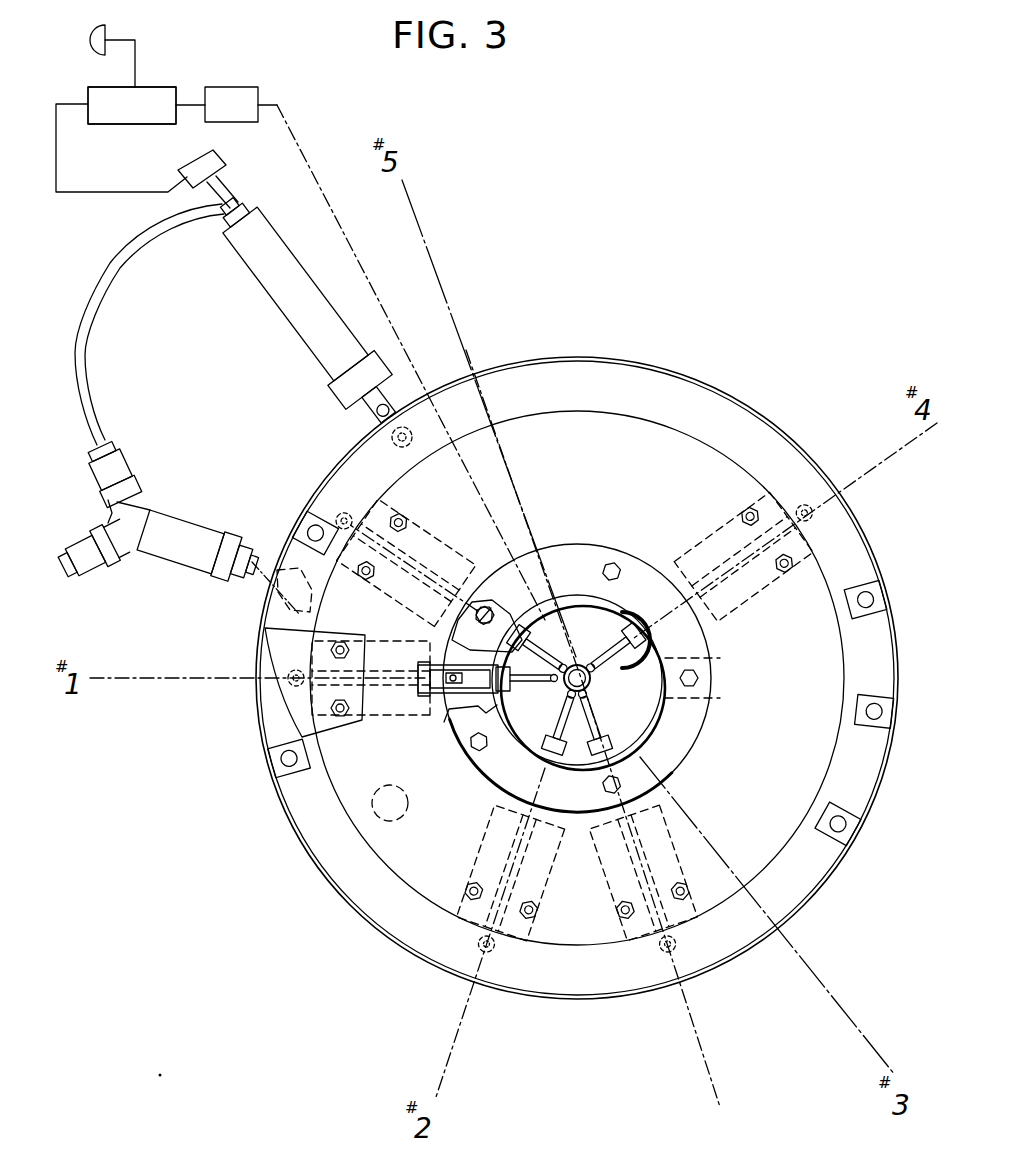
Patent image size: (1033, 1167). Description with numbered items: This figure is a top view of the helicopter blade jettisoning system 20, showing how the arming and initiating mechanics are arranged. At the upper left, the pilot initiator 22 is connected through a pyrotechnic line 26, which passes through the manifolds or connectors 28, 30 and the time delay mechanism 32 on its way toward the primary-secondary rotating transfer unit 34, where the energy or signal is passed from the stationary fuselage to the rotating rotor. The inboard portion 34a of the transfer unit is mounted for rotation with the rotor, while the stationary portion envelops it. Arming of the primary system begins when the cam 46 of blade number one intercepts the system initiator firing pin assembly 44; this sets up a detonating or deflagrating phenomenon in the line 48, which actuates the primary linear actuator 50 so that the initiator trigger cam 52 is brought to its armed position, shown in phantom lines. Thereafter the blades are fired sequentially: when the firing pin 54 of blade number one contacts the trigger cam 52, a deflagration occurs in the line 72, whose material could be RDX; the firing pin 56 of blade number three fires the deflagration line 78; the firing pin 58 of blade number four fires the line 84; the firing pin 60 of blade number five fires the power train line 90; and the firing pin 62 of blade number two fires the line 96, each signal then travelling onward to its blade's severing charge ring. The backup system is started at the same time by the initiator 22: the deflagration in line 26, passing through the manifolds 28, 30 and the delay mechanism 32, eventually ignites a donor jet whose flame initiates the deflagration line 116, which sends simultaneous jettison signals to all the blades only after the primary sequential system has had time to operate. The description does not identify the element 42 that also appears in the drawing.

The helicopter blade jettisoning system 20 is at (570, 699).
The pilot initiator 22 is at (92, 40).
The pyrotechnic line 26 is at (138, 45).
The manifold or connector 28 is at (132, 105).
The manifold or connector 30 is at (132, 105).
The time delay mechanism 32 is at (217, 104).
The primary-secondary rotating transfer unit 34 is at (828, 880).
The inboard portion of transfer unit 34a is at (775, 791).
The sensor 42 is at (186, 170).
The system initiator firing pin assembly 44 is at (392, 440).
The cam of blade number 1 46 is at (333, 722).
The line 48 is at (88, 348).
The primary linear actuator 50 is at (190, 540).
The initiator trigger cam 52 is at (272, 610).
The firing pin of blade number 1 54 is at (283, 688).
The firing pin of blade number 3 56 is at (346, 512).
The firing pin of blade number 4 58 is at (808, 505).
The firing pin of blade number 5 60 is at (664, 952).
The firing pin of blade number 2 62 is at (482, 948).
The deflagrating line 72 is at (528, 672).
The deflagration line 78 is at (524, 614).
The deflagration line 84 is at (608, 656).
The power train line 90 is at (598, 722).
The deflagration line 96 is at (556, 722).
The deflagration line 116 is at (592, 680).